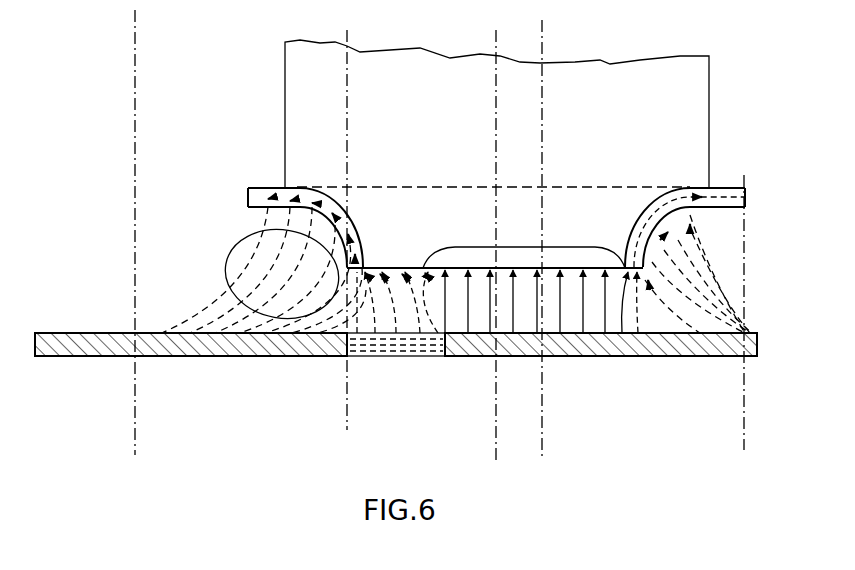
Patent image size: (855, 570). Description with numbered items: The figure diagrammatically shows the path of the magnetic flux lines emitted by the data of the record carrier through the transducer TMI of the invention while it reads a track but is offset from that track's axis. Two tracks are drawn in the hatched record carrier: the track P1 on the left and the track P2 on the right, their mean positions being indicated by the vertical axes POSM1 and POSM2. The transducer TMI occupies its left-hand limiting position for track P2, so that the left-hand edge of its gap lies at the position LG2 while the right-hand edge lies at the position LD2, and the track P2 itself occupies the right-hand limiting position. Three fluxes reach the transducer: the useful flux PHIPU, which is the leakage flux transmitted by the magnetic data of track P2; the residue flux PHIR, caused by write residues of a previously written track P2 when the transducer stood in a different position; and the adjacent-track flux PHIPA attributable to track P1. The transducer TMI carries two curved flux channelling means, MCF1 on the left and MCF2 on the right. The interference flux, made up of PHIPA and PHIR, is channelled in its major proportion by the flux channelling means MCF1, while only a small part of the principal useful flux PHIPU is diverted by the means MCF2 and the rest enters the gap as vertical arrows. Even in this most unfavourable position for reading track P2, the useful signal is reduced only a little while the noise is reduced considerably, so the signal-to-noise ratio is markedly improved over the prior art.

The transducer TMI is at (670, 90).
The mean position of track P1 POSM1 is at (165, 50).
The mean position of track P2 POSM2 is at (543, 100).
The left-hand gap edge position LG2 is at (348, 100).
The right-hand gap edge position LD2 is at (765, 312).
The flux channelling means MCF1 is at (258, 186).
The flux channelling means MCF2 is at (724, 200).
The adjacent-track flux PHIPA is at (228, 251).
The residue flux PHIR is at (370, 357).
The useful flux PHIPU is at (620, 357).
The track P1 is at (208, 335).
The track P2 is at (563, 357).